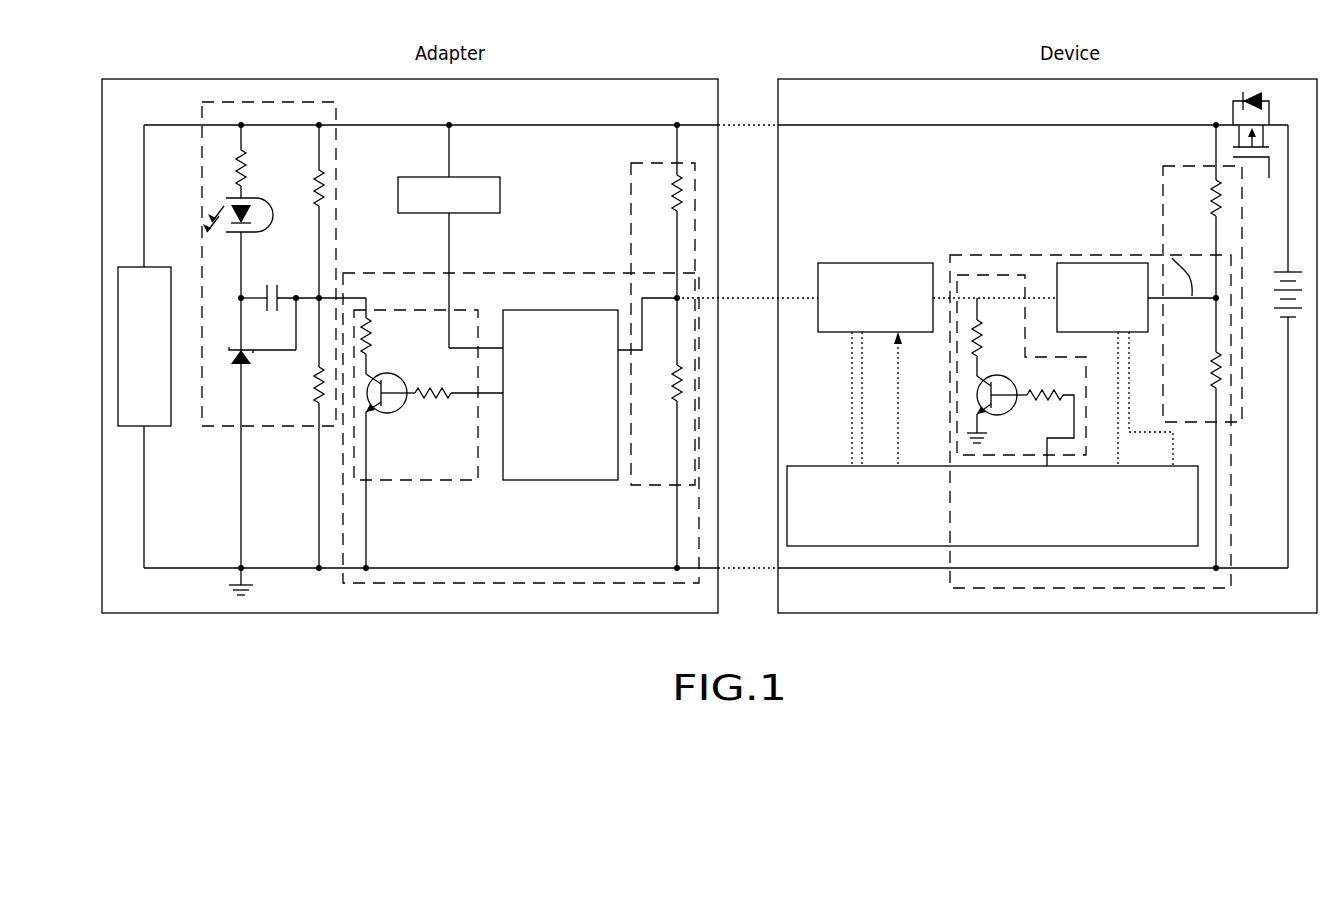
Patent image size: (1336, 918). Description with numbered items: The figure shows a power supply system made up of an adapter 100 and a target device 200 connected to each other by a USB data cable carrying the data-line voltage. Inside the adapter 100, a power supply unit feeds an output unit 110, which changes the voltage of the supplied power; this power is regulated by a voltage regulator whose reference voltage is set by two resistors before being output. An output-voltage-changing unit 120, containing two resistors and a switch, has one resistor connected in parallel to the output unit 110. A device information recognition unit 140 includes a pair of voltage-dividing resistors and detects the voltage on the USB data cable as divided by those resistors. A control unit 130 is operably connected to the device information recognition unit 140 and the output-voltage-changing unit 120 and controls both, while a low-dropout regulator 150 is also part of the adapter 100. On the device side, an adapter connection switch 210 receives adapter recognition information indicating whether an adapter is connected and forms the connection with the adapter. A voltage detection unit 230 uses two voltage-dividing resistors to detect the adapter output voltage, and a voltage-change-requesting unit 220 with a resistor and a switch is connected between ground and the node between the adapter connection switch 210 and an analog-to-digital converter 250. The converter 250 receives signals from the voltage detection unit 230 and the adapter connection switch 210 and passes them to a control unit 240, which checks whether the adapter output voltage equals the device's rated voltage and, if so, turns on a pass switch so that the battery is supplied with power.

The adapter 100 is at (667, 45).
The output unit 110 is at (337, 172).
The output-voltage-changing unit 120 is at (420, 480).
The control unit 130 is at (560, 480).
The device information recognition unit 140 is at (631, 170).
The low-dropout regulator (LDO) 150 is at (476, 177).
The target device 200 is at (1260, 45).
The adapter connection switch 210 is at (880, 263).
The voltage-change-requesting unit 220 is at (988, 270).
The voltage detection unit 230 is at (1163, 175).
The control unit 240 is at (830, 466).
The analog-to-digital converter (ADC) 250 is at (1048, 268).